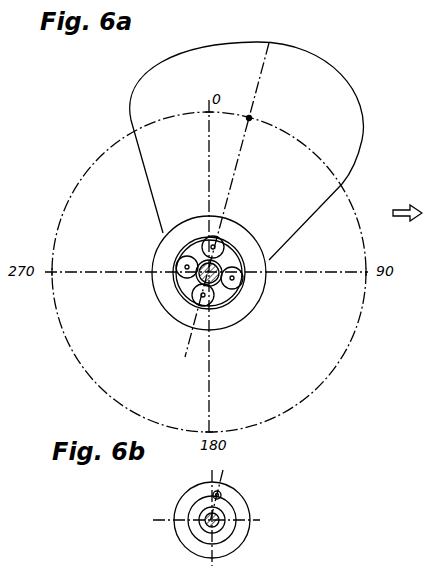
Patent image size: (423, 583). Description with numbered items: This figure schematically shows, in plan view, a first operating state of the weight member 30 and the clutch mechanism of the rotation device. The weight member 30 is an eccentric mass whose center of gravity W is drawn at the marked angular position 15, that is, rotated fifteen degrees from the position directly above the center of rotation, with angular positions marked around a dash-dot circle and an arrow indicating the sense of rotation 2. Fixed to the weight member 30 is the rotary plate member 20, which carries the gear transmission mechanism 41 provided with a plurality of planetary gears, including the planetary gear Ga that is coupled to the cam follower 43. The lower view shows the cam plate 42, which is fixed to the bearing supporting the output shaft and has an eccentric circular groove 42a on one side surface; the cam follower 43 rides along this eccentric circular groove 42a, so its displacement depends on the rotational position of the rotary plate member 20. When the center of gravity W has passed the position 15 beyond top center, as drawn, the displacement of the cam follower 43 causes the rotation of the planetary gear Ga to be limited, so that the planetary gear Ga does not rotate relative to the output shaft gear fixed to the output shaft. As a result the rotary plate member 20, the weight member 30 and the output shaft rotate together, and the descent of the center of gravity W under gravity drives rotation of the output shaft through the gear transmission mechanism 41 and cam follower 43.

In FIG. 6a, the reference point on weight 15 is at (261, 113).
In FIG. 6a, the rotary plate member 20 is at (153, 290).
In FIG. 6a, the weight member 30 is at (330, 80).
In FIG. 6a, the gear transmission mechanism 41 is at (230, 307).
In FIG. 6a, the planetary gear Ga is at (200, 220).
In FIG. 6a, the center of gravity W is at (247, 121).
In FIG. 6a, the direction of rotation 2 is at (408, 242).
In FIG. 6b, the cam plate 42 is at (175, 507).
In FIG. 6b, the eccentric circular groove 42a is at (238, 534).
In FIG. 6b, the cam follower 43 is at (224, 498).